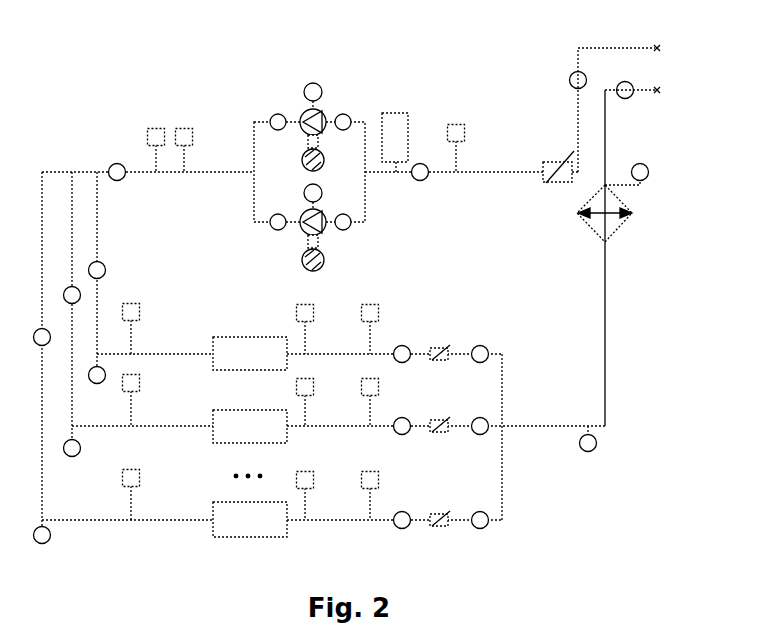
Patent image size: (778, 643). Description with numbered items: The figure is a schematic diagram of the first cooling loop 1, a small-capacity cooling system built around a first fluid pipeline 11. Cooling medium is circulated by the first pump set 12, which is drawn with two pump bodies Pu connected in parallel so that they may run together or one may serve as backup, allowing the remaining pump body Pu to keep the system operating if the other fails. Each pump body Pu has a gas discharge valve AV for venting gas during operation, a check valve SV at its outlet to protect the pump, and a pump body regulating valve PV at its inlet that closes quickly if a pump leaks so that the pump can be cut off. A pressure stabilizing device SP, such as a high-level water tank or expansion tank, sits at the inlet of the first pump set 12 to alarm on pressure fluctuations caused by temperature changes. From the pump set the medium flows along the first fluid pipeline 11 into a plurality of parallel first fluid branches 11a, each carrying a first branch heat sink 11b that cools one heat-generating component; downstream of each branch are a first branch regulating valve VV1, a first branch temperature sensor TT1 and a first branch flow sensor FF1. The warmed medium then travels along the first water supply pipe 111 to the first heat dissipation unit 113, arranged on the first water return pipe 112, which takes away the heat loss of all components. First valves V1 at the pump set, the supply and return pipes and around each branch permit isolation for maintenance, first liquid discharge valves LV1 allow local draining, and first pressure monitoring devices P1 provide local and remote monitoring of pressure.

The first cooling loop 1 is at (320, 54).
The first fluid pipeline 11 is at (616, 320).
The first fluid branch 11a is at (150, 352).
The first branch heat sink 11b is at (222, 343).
The first water supply pipe 111 is at (576, 118).
The first water return pipe 112 is at (606, 146).
The first heat dissipation unit 113 is at (620, 228).
The first pump set 12 is at (252, 110).
The pump body Pu is at (303, 113).
The pressure stabilizing device SP is at (406, 130).
The first pressure monitoring device P1 is at (187, 160).
The first branch temperature sensor TT1 is at (150, 131).
The first valve V1 is at (112, 164).
The gas discharge valve AV is at (320, 194).
The check valve SV is at (272, 229).
The pump body regulating valve PV is at (349, 230).
The first liquid discharge valve LV1 is at (426, 181).
The first branch flow sensor FF1 is at (556, 181).
The first branch regulating valve VV1 is at (406, 344).